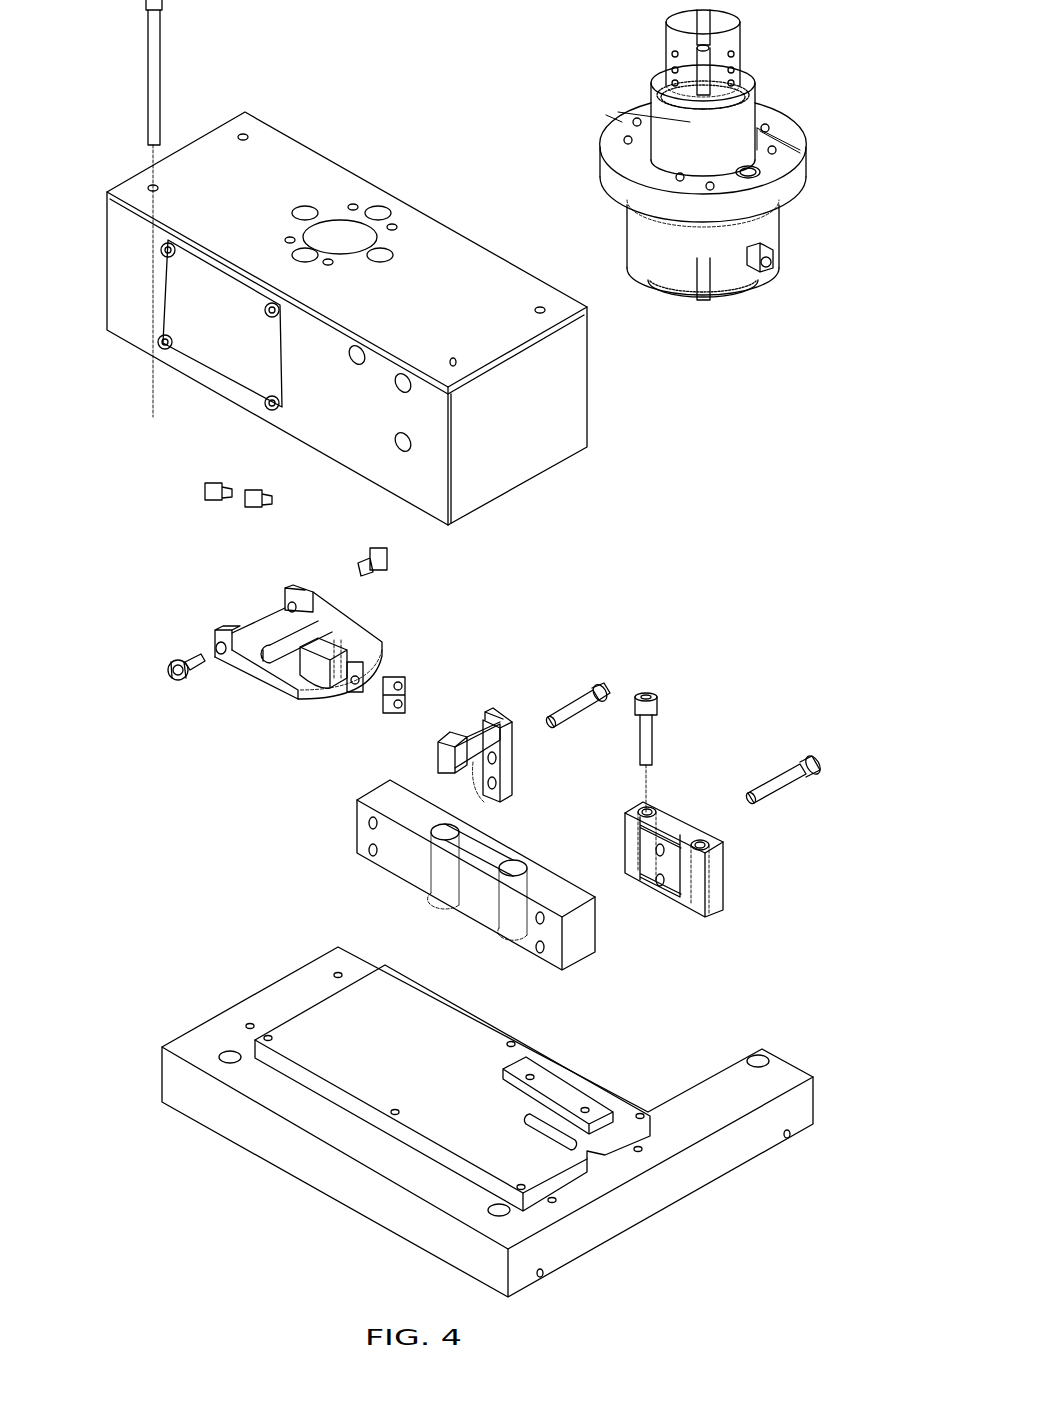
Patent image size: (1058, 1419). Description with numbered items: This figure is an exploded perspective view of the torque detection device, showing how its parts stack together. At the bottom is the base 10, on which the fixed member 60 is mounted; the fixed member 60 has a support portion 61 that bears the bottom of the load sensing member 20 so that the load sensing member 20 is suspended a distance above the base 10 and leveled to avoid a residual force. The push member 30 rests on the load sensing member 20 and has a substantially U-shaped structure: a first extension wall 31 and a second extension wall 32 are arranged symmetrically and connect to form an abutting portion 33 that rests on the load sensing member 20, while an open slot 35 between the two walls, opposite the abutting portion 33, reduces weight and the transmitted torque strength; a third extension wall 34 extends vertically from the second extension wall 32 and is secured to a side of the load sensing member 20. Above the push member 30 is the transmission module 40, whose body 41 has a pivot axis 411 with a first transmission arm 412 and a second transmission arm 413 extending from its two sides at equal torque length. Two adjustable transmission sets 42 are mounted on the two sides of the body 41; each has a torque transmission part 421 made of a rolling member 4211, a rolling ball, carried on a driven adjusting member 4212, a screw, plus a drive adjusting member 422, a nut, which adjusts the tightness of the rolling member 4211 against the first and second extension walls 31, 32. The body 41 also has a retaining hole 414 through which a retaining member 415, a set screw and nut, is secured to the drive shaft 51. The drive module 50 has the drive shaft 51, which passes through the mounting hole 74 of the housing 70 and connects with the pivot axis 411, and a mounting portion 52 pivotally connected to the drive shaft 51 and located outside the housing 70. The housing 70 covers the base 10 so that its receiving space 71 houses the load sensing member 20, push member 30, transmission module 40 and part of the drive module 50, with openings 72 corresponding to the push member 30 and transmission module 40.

The base 10 is at (693, 1165).
The load sensing member 20 is at (458, 910).
The push member 30 is at (509, 721).
The first extension wall 31 is at (453, 745).
The second extension wall 32 is at (498, 720).
The abutting portion 33 is at (474, 770).
The third extension wall 34 is at (505, 767).
The open slot 35 is at (468, 725).
The transmission module 40 is at (298, 647).
The body 41 is at (326, 601).
The pivot axis 411 is at (343, 652).
The first transmission arm 412 is at (228, 642).
The second transmission arm 413 is at (300, 595).
The retaining hole 414 is at (357, 667).
The retaining member 415 is at (250, 492).
The adjustable transmission set 42 is at (267, 593).
The torque transmission part 421 is at (212, 608).
The rolling member 4211 is at (207, 653).
The driven adjusting member 4212 is at (186, 638).
The drive adjusting member 422 is at (153, 627).
The drive module 50 is at (649, 155).
The drive shaft 51 is at (650, 107).
The mounting portion 52 is at (668, 52).
The fixed member 60 is at (724, 833).
The support portion 61 is at (663, 897).
The housing 70 is at (343, 275).
The receiving space 71 is at (338, 247).
The opening 72 is at (208, 312).
The mounting hole 74 is at (300, 216).